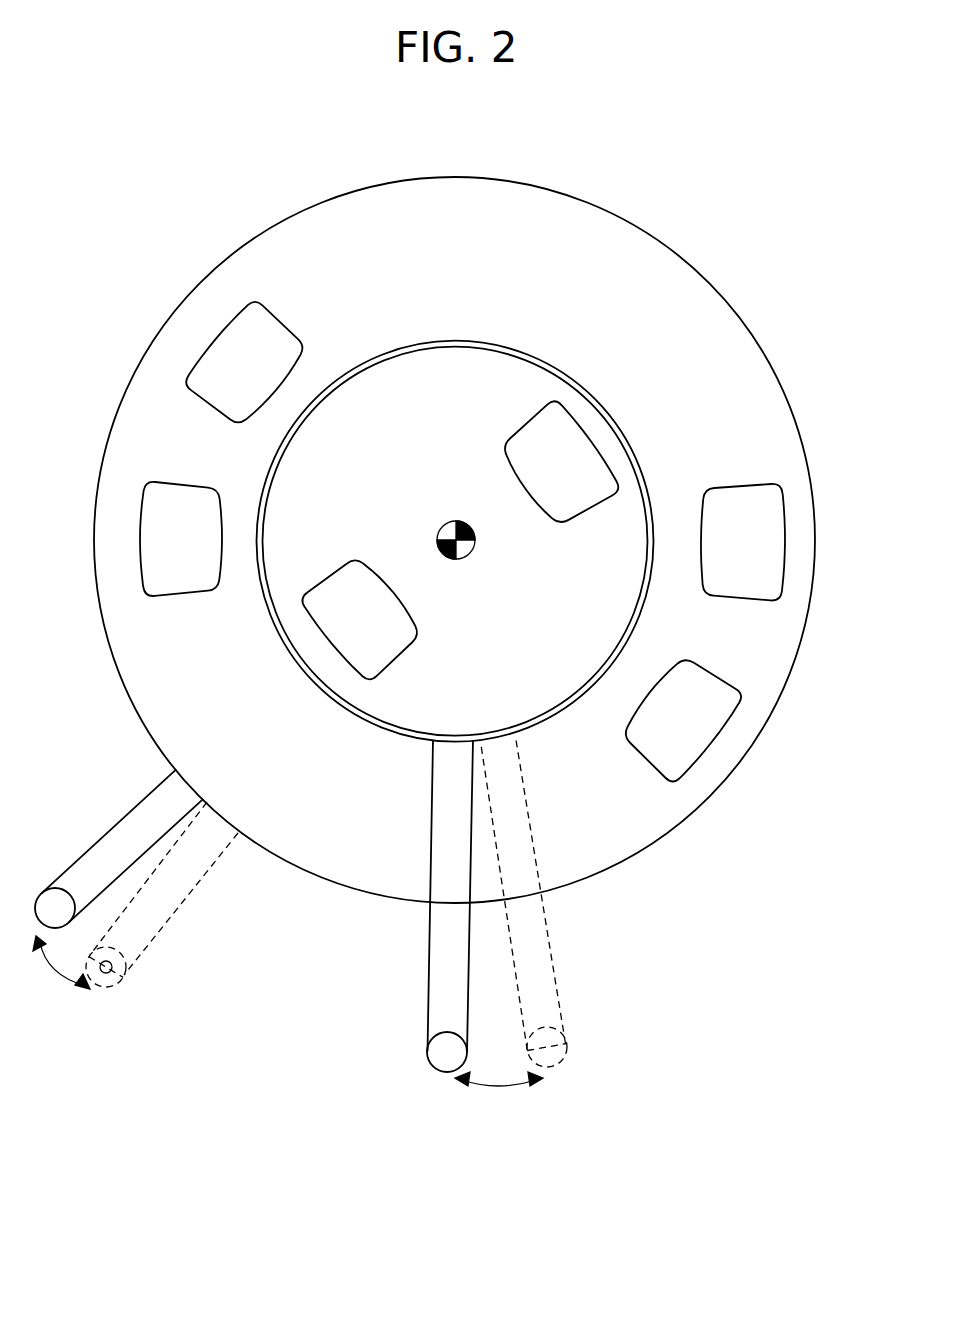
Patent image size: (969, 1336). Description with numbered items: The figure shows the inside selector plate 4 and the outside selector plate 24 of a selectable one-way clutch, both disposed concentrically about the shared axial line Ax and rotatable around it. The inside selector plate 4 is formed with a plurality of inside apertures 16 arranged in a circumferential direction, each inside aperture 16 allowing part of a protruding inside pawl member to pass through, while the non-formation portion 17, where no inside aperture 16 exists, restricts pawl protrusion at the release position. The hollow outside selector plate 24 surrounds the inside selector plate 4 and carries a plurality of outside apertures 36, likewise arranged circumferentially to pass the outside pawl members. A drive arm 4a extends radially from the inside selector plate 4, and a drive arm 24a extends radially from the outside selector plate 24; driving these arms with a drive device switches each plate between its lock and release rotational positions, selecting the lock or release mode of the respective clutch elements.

The outside selector plate 24 is at (458, 200).
The drive arm 24a is at (137, 823).
The inside selector plate 4 is at (507, 377).
The non-formation portion 17 is at (443, 388).
The drive arm 4a is at (448, 947).
The outside apertures 36 is at (235, 340).
The inside apertures 16 is at (572, 448).
The axial line Ax is at (468, 557).